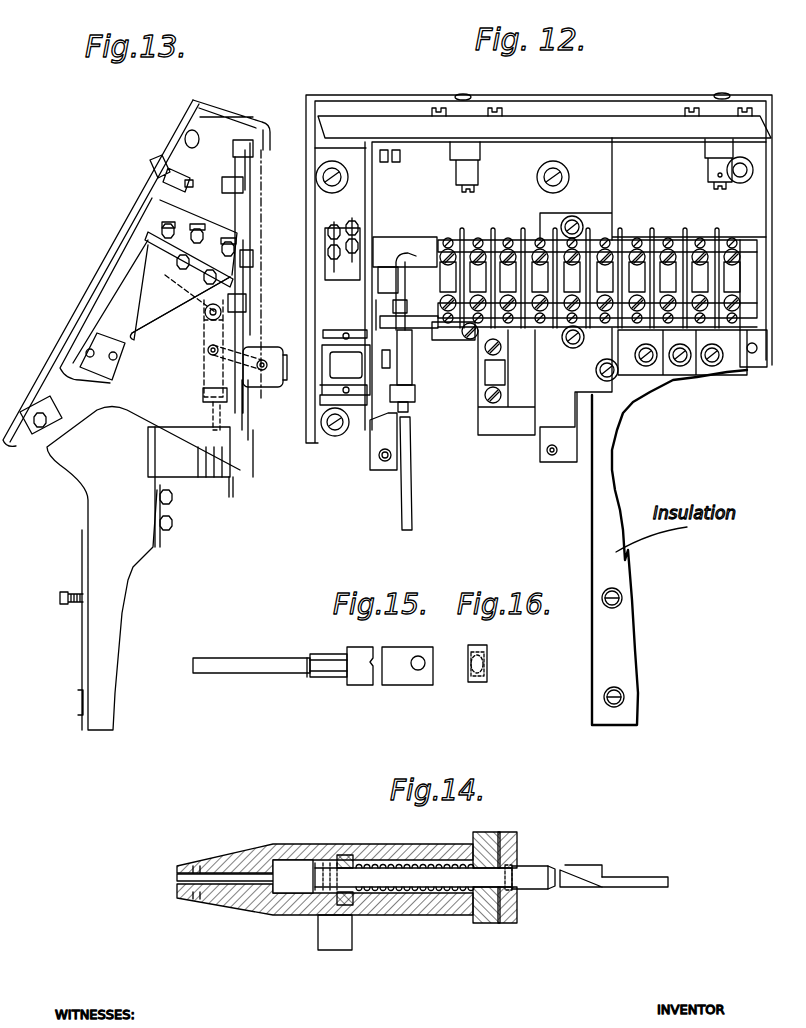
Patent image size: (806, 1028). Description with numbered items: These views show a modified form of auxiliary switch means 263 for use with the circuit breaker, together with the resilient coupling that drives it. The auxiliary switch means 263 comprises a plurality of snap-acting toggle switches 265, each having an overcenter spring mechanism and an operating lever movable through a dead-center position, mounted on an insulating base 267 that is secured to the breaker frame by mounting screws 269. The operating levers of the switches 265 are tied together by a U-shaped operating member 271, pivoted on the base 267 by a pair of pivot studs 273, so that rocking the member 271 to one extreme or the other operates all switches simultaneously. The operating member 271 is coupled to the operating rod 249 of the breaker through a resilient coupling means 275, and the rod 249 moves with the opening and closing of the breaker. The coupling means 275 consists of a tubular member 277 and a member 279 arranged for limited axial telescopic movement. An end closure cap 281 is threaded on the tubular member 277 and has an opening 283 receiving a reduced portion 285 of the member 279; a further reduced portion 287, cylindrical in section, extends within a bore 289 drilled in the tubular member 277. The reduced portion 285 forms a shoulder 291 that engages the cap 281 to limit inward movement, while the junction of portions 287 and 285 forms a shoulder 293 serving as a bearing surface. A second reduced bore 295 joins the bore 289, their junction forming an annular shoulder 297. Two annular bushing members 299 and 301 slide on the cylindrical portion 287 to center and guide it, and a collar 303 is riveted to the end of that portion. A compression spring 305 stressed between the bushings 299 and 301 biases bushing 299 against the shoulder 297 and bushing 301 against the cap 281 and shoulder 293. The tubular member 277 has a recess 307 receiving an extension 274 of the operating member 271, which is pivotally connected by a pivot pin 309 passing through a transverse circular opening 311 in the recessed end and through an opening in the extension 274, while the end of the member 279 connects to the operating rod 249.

In FIG. 12, the operating rod 249 is at (411, 517).
In FIG. 12, the auxiliary switch means 263 is at (742, 391).
In FIG. 12, the snap-acting toggle switches 265 is at (518, 240).
In FIG. 12, the insulating base 267 is at (596, 532).
In FIG. 13, the mounting screws 269 is at (64, 606).
In FIG. 12, the mounting screws 269 is at (603, 693).
In FIG. 13, the U-shaped operating member 271 is at (200, 314).
In FIG. 12, the U-shaped operating member 271 is at (417, 253).
In FIG. 12, the pivot studs 273 is at (766, 345).
In FIG. 12, the extension 274 is at (403, 322).
In FIG. 13, the resilient coupling means 275 is at (204, 372).
In FIG. 12, the resilient coupling means 275 is at (458, 384).
In FIG. 14, the resilient coupling means 275 is at (405, 830).
In FIG. 12, the tubular member 277 is at (405, 355).
In FIG. 14, the tubular member 277 is at (287, 915).
In FIG. 13, the member 279 is at (212, 410).
In FIG. 12, the member 279 is at (410, 408).
In FIG. 15, the member 279 is at (400, 652).
In FIG. 16, the member 279 is at (477, 645).
In FIG. 14, the member 279 is at (600, 888).
In FIG. 13, the end closure cap 281 is at (232, 400).
In FIG. 12, the end closure cap 281 is at (415, 392).
In FIG. 14, the end closure cap 281 is at (517, 840).
In FIG. 14, the opening 283 is at (517, 862).
In FIG. 15, the reduced portion 285 is at (333, 678).
In FIG. 16, the reduced portion 285 is at (490, 650).
In FIG. 14, the reduced portion 285 is at (543, 889).
In FIG. 15, the further reduced portion 287 is at (255, 658).
In FIG. 16, the further reduced portion 287 is at (487, 665).
In FIG. 14, the further reduced portion 287 is at (440, 870).
In FIG. 14, the bore 289 is at (377, 907).
In FIG. 15, the shoulder 291 is at (350, 685).
In FIG. 14, the shoulder 291 is at (560, 867).
In FIG. 15, the shoulder 293 is at (307, 677).
In FIG. 14, the shoulder 293 is at (507, 885).
In FIG. 14, the second reduced bore 295 is at (305, 897).
In FIG. 14, the annular shoulder 297 is at (330, 920).
In FIG. 14, the annular bushing member 299 is at (350, 860).
In FIG. 14, the annular bushing member 301 is at (500, 832).
In FIG. 14, the collar 303 is at (300, 847).
In FIG. 14, the compression spring 305 is at (430, 903).
In FIG. 12, the recess 307 is at (433, 328).
In FIG. 14, the recess 307 is at (187, 878).
In FIG. 13, the pivot pin 309 is at (240, 295).
In FIG. 12, the pivot pin 309 is at (393, 305).
In FIG. 14, the transverse circular opening 311 is at (200, 900).